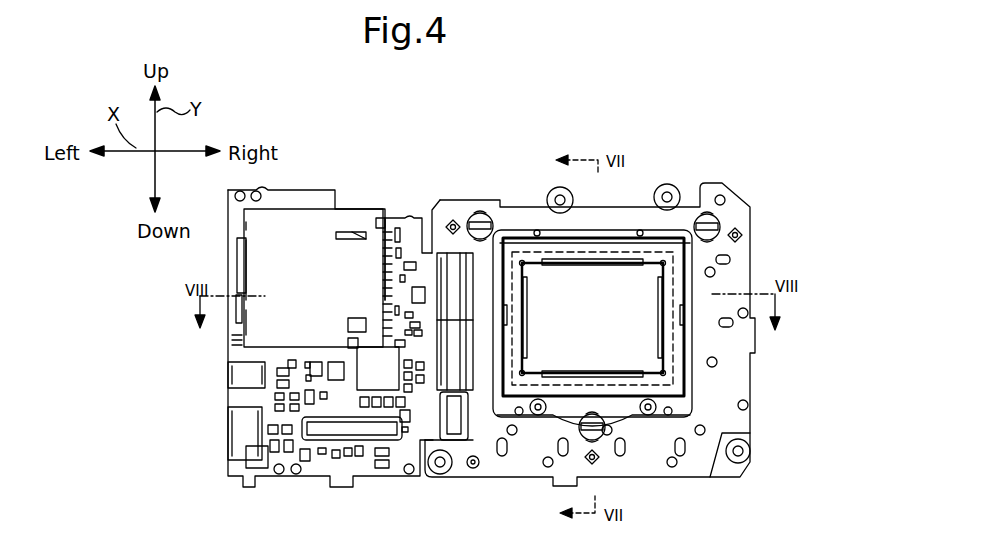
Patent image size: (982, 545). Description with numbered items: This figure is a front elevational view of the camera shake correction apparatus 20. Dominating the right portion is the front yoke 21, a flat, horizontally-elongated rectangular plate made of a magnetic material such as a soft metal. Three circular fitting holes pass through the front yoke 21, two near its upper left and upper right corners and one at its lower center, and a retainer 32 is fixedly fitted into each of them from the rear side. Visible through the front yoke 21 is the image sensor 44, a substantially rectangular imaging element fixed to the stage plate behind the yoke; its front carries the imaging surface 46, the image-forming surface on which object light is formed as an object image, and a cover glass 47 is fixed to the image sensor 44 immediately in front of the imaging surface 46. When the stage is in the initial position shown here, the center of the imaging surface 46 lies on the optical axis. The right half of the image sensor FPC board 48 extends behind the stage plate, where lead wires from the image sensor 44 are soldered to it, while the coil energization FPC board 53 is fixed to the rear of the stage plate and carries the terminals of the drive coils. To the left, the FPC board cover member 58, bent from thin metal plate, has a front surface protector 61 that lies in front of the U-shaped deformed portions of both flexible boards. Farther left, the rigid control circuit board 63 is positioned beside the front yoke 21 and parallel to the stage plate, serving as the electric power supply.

The camera shake correction apparatus 20 is at (351, 104).
The front yoke 21 is at (738, 212).
The retainer 32 is at (478, 212).
The image sensor 44 is at (676, 342).
The imaging surface 46 is at (592, 318).
The cover glass 47 is at (545, 290).
The image sensor FPC board 48 is at (433, 298).
The coil energization FPC board 53 is at (440, 430).
The FPC board cover member 58 is at (455, 270).
The front surface protector 61 is at (455, 321).
The control circuit board 63 is at (398, 222).